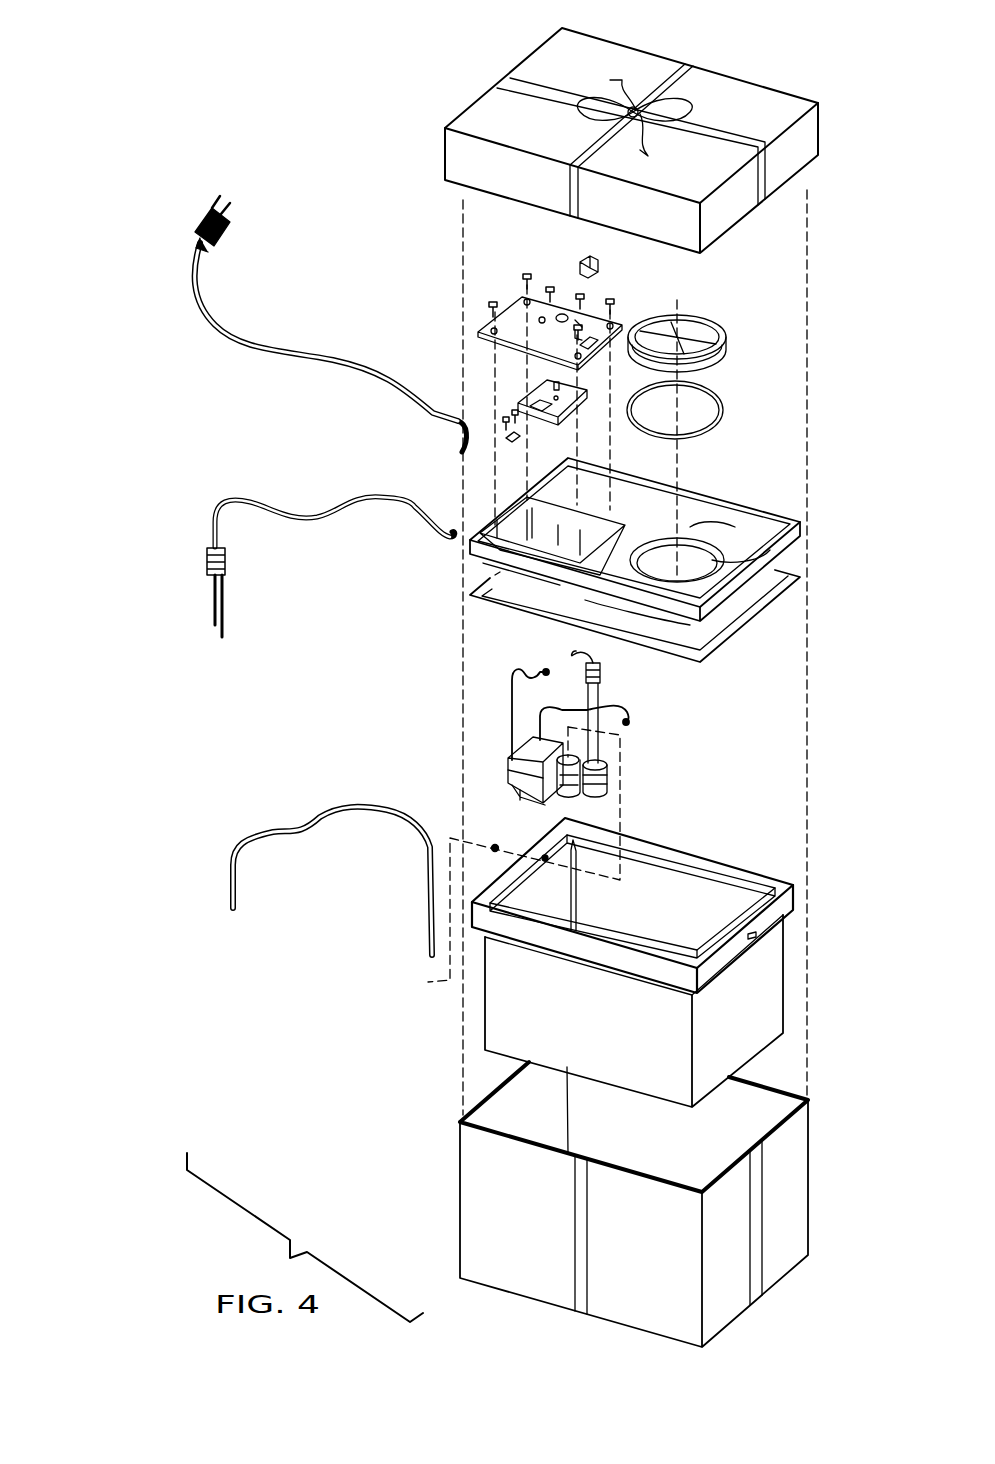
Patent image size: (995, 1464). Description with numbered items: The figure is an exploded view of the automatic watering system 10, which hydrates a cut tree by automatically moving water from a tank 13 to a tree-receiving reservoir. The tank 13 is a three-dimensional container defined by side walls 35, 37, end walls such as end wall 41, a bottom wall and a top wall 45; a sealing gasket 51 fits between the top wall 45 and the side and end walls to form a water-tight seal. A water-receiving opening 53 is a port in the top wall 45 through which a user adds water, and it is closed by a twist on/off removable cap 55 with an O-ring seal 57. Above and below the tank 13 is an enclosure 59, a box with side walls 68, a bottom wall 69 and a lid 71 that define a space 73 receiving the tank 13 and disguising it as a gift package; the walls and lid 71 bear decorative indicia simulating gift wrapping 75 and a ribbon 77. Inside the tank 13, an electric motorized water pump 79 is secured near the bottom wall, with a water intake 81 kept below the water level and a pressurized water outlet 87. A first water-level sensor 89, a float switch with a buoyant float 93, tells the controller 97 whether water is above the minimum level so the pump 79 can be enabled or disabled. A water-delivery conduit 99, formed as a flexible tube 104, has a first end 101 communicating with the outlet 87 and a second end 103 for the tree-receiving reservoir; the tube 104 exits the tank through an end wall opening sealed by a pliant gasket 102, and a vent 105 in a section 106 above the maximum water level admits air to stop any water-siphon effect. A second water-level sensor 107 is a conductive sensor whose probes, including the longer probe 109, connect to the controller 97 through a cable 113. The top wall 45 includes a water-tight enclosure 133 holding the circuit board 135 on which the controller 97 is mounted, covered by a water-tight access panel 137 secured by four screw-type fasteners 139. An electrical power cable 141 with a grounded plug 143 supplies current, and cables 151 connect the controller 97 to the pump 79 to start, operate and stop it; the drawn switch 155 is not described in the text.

The automatic watering system 10 is at (845, 367).
The tank 13 is at (505, 1014).
The side wall 35 is at (500, 1032).
The side wall 37 is at (720, 905).
The end wall 41 is at (770, 1013).
The top wall 45 is at (710, 505).
The sealing gasket 51 is at (730, 650).
The water-receiving opening 53 is at (730, 552).
The cap 55 is at (710, 320).
The O-ring seal 57 is at (715, 400).
The enclosure 59 is at (455, 88).
The side walls 68 is at (497, 1102).
The bottom wall 69 is at (683, 1348).
The lid 71 is at (595, 53).
The space 73 is at (757, 1120).
The gift wrapping 75 is at (735, 95).
The ribbon 77 is at (640, 106).
The water pump 79 is at (520, 768).
The water intake 81 is at (575, 797).
The pressurized water outlet 87 is at (597, 745).
The first water-level sensor 89 is at (612, 745).
The float 93 is at (607, 782).
The controller 97 is at (515, 395).
The water-delivery conduit 99 is at (310, 830).
The first end 101 is at (430, 957).
The gasket 102 is at (495, 845).
The second end 103 is at (237, 905).
The flexible tube 104 is at (275, 832).
The vent 105 is at (430, 830).
The section 106 is at (427, 893).
The second water-level sensor 107 is at (205, 552).
The conductive sensor probe 109 is at (215, 600).
The cable 113 is at (300, 513).
The water-tight enclosure 133 is at (483, 563).
The circuit board 135 is at (545, 388).
The access panel 137 is at (518, 318).
The screw-type fasteners 139 is at (520, 280).
The electrical power cable 141 is at (228, 338).
The grounded plug 143 is at (210, 200).
The cables 151 is at (512, 721).
The switch 155 is at (600, 272).